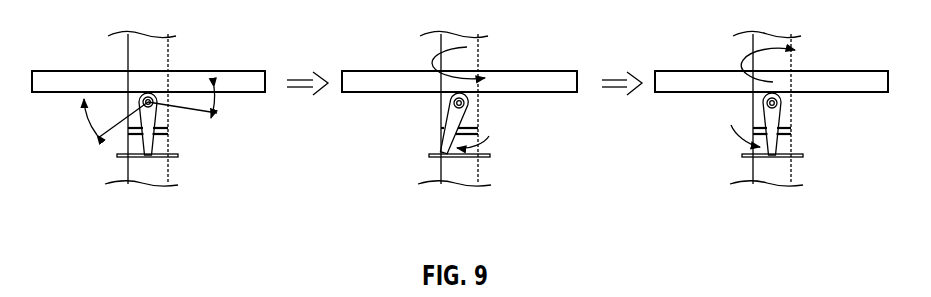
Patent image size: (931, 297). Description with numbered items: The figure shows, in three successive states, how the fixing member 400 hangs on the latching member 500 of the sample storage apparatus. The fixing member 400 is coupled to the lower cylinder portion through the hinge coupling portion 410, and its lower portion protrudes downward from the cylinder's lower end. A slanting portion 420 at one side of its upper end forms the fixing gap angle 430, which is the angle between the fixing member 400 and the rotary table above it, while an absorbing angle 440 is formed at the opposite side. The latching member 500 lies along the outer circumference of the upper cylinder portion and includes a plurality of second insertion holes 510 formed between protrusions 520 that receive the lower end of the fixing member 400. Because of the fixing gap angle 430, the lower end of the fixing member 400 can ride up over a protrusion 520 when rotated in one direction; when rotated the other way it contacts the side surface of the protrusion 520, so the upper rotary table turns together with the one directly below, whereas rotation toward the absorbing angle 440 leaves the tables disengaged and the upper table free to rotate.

The fixing member 400 is at (157, 111).
The hinge coupling portion 410 is at (148, 102).
The slanting portion 420 is at (130, 93).
The fixing gap angle 430 is at (82, 106).
The absorbing angle 440 is at (217, 113).
The latching member 500 is at (118, 157).
The second insertion hole 510 is at (445, 160).
The protrusion 520 is at (160, 158).